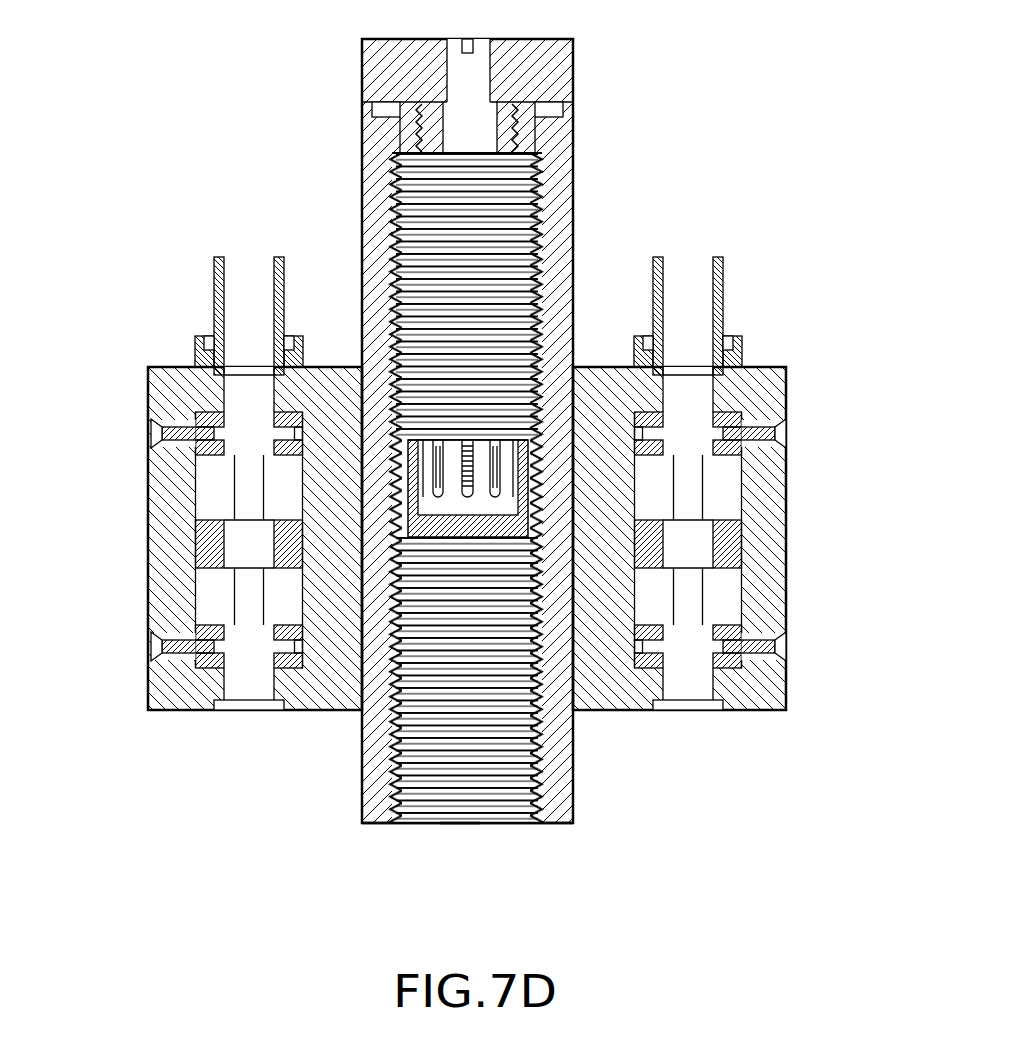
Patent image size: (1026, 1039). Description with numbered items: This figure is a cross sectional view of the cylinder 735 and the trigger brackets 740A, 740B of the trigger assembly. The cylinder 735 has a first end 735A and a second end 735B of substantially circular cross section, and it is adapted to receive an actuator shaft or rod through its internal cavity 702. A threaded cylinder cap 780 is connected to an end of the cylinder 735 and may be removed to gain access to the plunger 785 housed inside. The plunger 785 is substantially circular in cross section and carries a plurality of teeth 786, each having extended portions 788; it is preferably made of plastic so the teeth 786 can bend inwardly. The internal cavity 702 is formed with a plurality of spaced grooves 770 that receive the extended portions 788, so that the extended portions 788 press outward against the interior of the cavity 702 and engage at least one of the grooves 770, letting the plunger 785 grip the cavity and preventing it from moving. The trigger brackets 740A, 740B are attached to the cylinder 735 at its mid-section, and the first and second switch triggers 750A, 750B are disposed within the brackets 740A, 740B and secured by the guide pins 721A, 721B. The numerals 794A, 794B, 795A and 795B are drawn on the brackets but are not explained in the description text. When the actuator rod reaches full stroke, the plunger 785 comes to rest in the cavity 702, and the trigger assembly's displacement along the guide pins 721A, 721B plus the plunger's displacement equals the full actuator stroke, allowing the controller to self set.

The internal cavity 702 is at (457, 840).
The guide pin 721A is at (695, 290).
The guide pin 721B is at (247, 273).
The cylinder 735 is at (574, 183).
The first end 735A is at (575, 815).
The second end 735B is at (574, 118).
The trigger bracket 740A is at (786, 507).
The trigger bracket 740B is at (148, 497).
The first switch trigger 750A is at (727, 553).
The second switch trigger 750B is at (205, 527).
The grooves 770 is at (397, 803).
The threaded cylinder cap 780 is at (574, 62).
The plunger 785 is at (402, 487).
The teeth 786 is at (483, 453).
The extended portions 788 is at (405, 443).
The first clamp 794A is at (652, 665).
The second clamp 794B is at (214, 665).
The first screw 795A is at (727, 415).
The second screw 795B is at (195, 448).